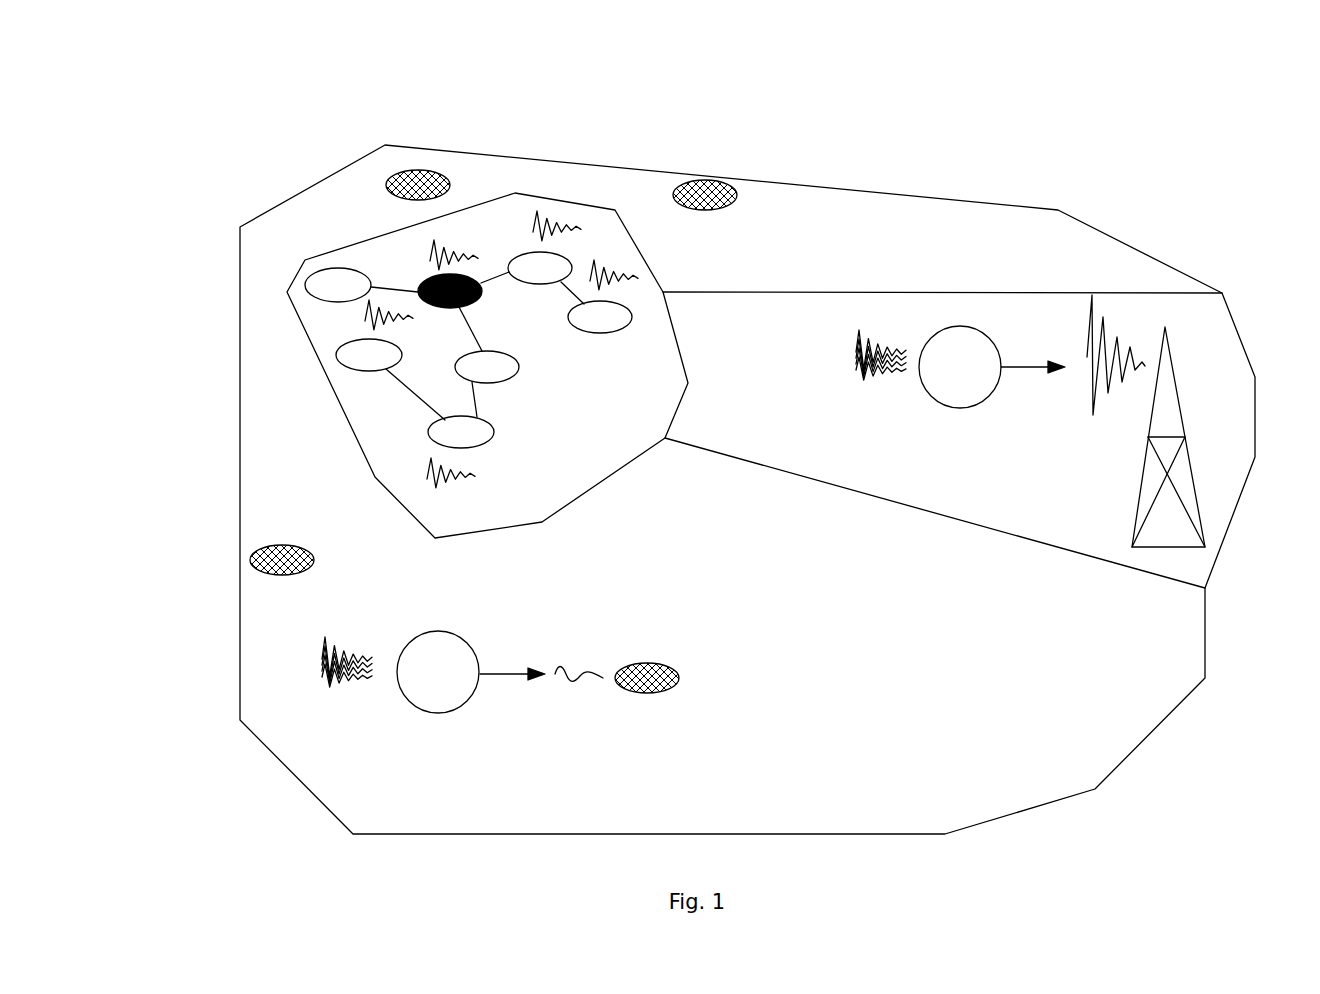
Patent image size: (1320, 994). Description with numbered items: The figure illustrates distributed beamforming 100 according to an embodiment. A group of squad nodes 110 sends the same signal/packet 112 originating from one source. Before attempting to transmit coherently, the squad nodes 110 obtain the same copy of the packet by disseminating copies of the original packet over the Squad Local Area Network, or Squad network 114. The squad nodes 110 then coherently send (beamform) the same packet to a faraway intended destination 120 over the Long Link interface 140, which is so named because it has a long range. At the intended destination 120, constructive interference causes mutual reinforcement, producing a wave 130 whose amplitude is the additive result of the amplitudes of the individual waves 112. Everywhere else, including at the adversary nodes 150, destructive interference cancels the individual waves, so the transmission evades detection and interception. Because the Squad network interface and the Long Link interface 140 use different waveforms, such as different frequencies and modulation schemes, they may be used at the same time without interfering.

The distributed beamforming 100 is at (222, 152).
The squad nodes 110 is at (598, 380).
The signal/packet 112 is at (446, 243).
The Squad network 114 is at (572, 503).
The intended destination 120 is at (1178, 392).
The wave 130 is at (1103, 330).
The Long Link interface 140 is at (962, 410).
The adversary nodes 150 is at (525, 750).